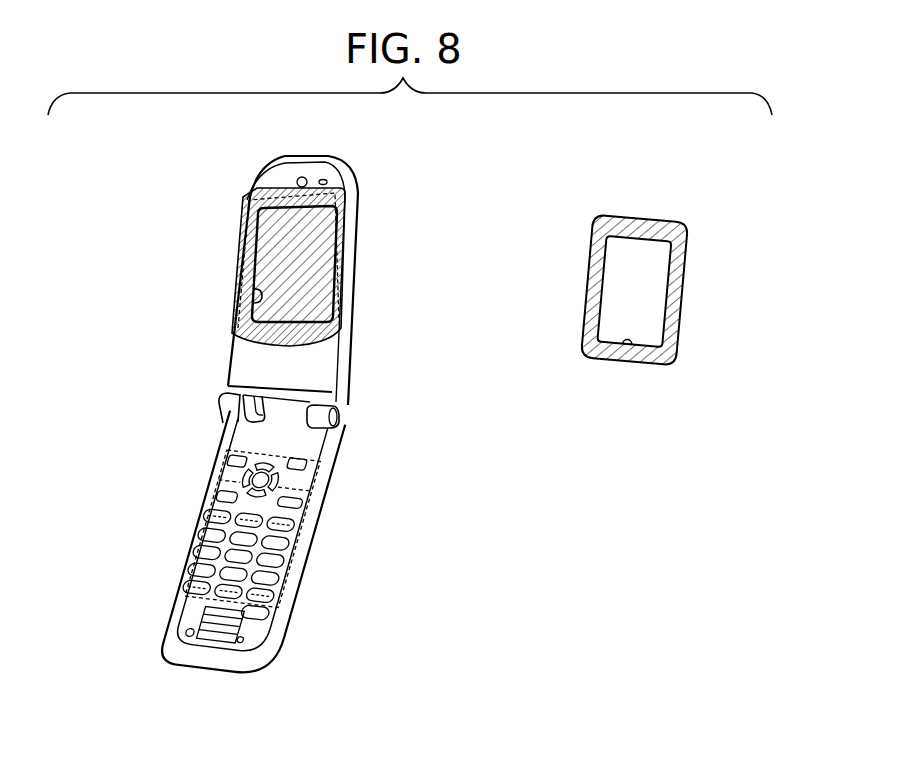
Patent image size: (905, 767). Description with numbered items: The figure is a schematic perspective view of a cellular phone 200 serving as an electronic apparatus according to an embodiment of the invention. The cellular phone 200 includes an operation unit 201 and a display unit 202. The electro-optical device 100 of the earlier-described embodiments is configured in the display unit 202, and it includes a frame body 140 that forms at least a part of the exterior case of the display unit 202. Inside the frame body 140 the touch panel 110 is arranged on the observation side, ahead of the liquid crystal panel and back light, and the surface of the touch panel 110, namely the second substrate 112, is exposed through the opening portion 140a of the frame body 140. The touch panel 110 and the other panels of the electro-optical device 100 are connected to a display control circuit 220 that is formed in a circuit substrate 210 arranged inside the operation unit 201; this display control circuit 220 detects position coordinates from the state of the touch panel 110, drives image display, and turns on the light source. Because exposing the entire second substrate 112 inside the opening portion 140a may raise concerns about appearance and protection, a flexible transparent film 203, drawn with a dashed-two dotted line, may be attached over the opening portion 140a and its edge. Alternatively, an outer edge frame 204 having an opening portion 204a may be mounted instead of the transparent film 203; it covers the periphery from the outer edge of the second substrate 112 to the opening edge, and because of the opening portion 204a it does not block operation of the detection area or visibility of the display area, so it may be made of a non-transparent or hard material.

The cellular phone 200 is at (147, 154).
The second substrate 112 is at (270, 191).
The transparent film 203 is at (356, 191).
The touch panel 110 is at (344, 248).
The display unit 202 is at (242, 252).
The opening portion 140a is at (252, 297).
The electro-optical device 100 is at (297, 277).
The frame body 140 is at (340, 330).
The operation unit 201 is at (203, 522).
The display control circuit 220 is at (312, 495).
The circuit substrate 210 is at (312, 568).
The outer edge frame 204 is at (665, 316).
The opening portion 204a is at (625, 348).